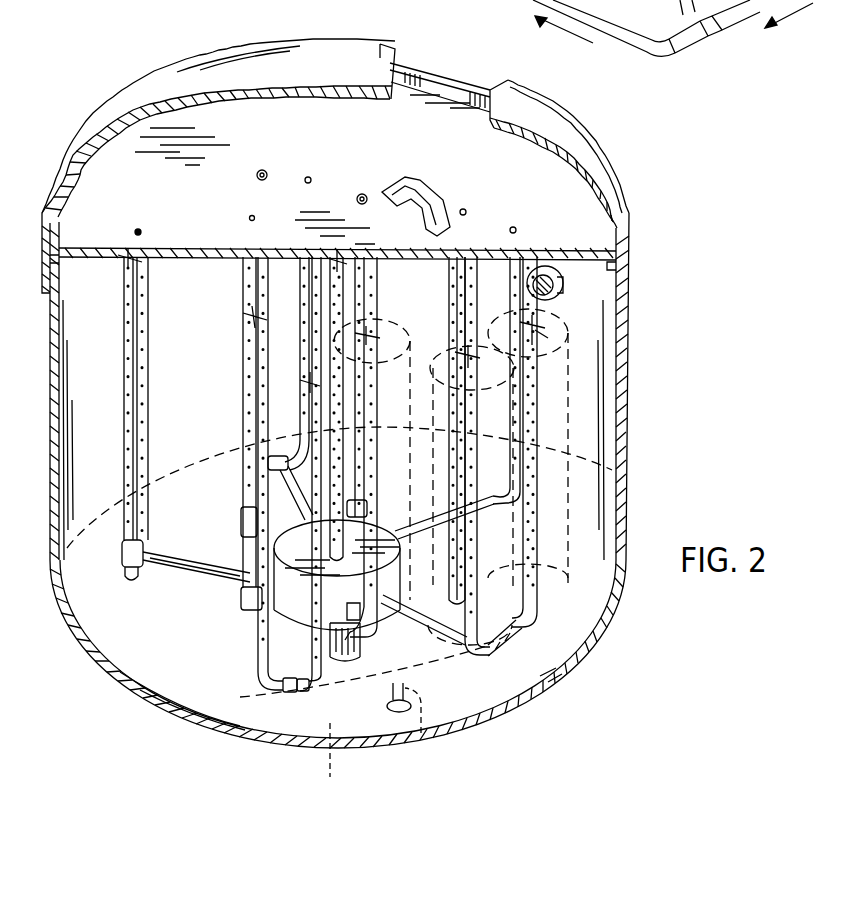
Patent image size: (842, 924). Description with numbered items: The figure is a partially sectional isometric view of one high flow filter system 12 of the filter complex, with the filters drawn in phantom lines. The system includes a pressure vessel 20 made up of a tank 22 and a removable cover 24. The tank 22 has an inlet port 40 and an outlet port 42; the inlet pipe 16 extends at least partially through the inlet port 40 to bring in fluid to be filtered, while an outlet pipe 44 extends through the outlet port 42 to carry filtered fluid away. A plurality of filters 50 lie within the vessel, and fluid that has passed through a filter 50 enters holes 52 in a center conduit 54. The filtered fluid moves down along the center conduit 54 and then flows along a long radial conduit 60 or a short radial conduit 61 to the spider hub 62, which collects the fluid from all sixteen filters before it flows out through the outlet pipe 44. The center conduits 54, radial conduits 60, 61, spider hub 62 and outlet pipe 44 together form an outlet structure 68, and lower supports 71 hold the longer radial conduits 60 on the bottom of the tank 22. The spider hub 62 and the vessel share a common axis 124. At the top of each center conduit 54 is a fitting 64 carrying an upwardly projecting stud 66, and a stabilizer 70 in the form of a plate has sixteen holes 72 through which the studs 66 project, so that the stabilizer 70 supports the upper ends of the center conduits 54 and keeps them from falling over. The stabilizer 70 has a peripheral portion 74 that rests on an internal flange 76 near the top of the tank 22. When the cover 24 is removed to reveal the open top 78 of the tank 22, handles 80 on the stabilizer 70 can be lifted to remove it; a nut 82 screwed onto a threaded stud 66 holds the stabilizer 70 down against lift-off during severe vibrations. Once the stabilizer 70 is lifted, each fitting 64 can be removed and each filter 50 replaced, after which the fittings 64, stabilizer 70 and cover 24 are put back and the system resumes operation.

The high flow filter system 12 is at (191, 46).
The inlet pipe 16 is at (545, 320).
The pressure vessel 20 is at (44, 420).
The tank 22 is at (46, 355).
The removable cover 24 is at (137, 112).
The inlet port 40 is at (563, 287).
The outlet port 42 is at (350, 640).
The outlet pipe 44 is at (335, 635).
The filter 50 is at (572, 400).
The hole 52 is at (535, 442).
The center conduit 54 is at (525, 492).
The long radial conduit 60 is at (530, 708).
The short radial conduit 61 is at (425, 610).
The spider hub 62 is at (350, 612).
The fitting 64 is at (545, 340).
The stud 66 is at (455, 257).
The outlet structure 68 is at (205, 627).
The stabilizer 70 is at (263, 120).
The lower support 71 is at (421, 735).
The hole 72 is at (455, 253).
The peripheral portion 74 is at (580, 200).
The internal flange 76 is at (61, 264).
The open top 78 is at (460, 73).
The handle 80 is at (423, 180).
The nut 82 is at (360, 197).
The axis 124 is at (335, 760).